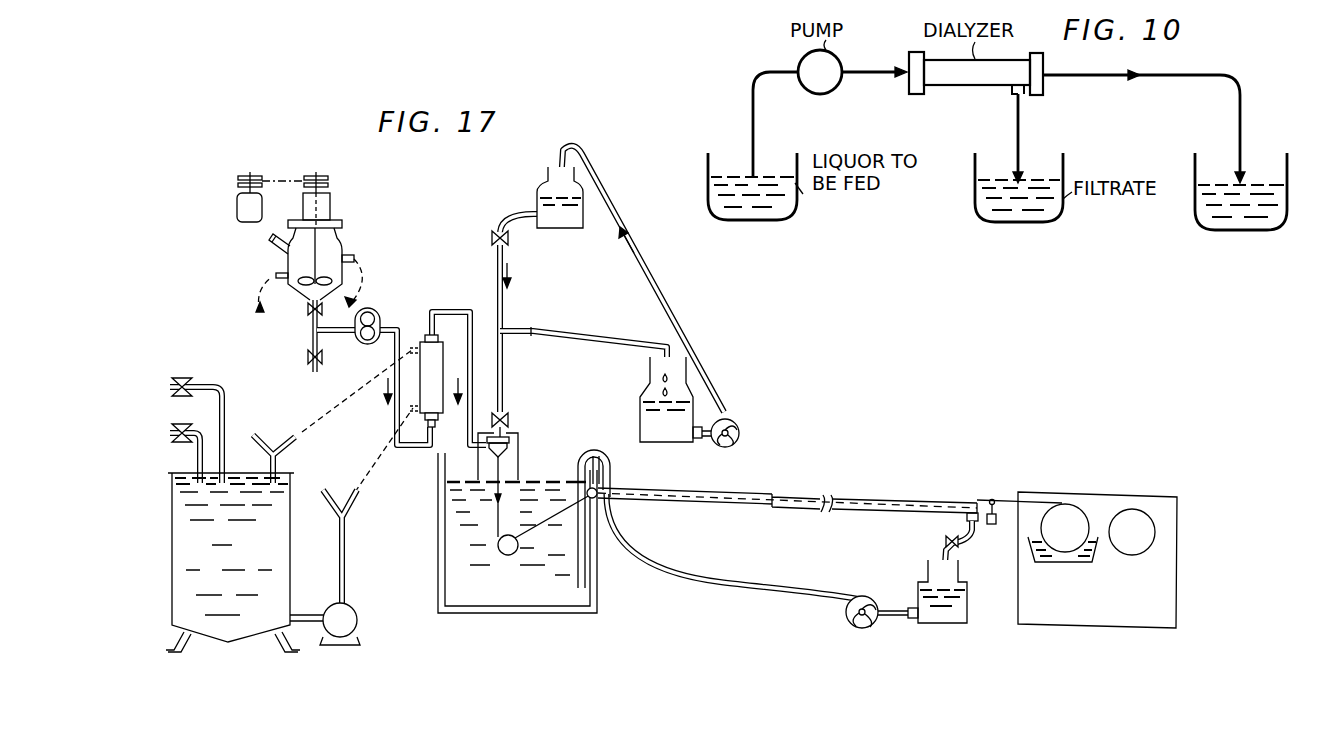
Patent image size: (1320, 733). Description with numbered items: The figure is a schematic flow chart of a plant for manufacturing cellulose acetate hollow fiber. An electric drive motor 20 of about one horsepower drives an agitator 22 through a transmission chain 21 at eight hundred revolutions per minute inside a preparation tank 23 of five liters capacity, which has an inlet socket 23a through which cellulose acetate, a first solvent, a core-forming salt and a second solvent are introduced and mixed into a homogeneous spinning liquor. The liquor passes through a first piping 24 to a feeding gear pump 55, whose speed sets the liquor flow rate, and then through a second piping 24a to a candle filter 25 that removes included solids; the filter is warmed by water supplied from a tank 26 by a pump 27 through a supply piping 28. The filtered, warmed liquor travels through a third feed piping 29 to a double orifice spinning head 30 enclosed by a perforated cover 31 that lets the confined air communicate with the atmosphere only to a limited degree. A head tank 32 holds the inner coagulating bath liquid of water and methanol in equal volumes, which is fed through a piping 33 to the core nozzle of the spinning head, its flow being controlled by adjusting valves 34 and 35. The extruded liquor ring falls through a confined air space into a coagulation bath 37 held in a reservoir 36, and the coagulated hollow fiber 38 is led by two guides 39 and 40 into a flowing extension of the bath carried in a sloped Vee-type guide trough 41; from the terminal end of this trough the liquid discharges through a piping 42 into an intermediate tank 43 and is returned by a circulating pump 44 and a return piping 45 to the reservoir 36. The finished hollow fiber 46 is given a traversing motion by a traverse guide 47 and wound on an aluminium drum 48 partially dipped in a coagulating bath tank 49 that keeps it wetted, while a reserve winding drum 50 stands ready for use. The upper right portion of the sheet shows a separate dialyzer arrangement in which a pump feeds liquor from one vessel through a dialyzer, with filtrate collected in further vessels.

The electric drive motor 20 is at (239, 212).
The transmission chain 21 is at (287, 180).
The agitator 22 is at (318, 215).
The preparation tank 23 is at (348, 244).
The inlet socket 23a is at (280, 250).
The first piping 24 is at (333, 331).
The second piping 24a is at (425, 446).
The candle filter 25 is at (437, 358).
The tank 26 is at (290, 562).
The pump 27 is at (358, 626).
The supply piping 28 is at (350, 513).
The third feed piping 29 is at (465, 311).
The double orifice spinning head 30 is at (518, 438).
The cover 31 is at (520, 456).
The head tank 32 is at (557, 229).
The piping 33 is at (513, 220).
The adjusting valve 34 is at (493, 238).
The adjusting valve 35 is at (505, 414).
The reservoir 36 is at (553, 615).
The coagulation bath 37 is at (440, 568).
The coagulated hollow fiber 38 is at (495, 514).
The guide 39 is at (509, 556).
The guide 40 is at (600, 497).
The guide pipe 41 is at (748, 490).
The piping 42 is at (942, 556).
The collection bottle 43 is at (955, 625).
The circulating pump 44 is at (852, 624).
The return piping 45 is at (745, 590).
The hollow fiber 46 is at (986, 497).
The traverse guide 47 is at (993, 497).
The aluminium drum 48 is at (1076, 512).
The coagulating bath tank 49 is at (1068, 563).
The reserve winding drum 50 is at (1152, 531).
The feeding gear pump 55 is at (375, 310).